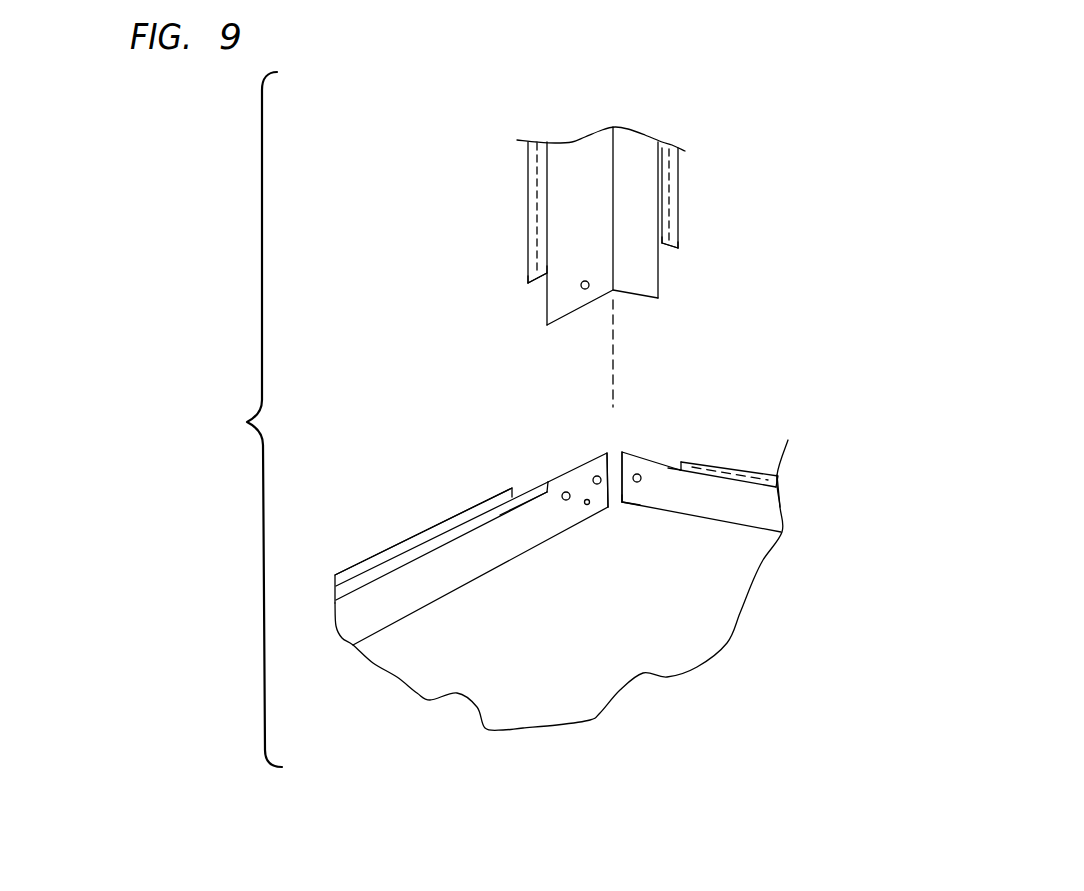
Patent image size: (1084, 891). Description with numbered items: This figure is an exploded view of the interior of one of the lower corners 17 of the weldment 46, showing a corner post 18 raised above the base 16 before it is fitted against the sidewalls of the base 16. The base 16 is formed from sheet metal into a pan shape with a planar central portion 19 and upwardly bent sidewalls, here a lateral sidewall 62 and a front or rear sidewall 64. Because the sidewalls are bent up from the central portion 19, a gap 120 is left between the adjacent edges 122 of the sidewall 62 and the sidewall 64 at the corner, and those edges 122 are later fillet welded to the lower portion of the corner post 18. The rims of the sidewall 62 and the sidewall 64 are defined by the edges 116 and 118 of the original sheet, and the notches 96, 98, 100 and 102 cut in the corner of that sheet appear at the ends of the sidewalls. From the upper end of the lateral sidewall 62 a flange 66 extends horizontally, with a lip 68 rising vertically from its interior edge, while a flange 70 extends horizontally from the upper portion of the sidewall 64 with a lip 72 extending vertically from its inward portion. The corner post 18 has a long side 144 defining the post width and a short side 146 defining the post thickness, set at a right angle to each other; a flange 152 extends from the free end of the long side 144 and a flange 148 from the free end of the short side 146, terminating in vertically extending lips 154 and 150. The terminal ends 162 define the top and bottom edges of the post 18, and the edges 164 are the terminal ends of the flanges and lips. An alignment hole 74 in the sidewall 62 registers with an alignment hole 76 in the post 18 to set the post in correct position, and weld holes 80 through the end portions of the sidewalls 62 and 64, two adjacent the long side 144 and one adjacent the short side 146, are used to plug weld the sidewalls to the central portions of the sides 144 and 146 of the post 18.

The base 16 is at (760, 584).
The lower corner 17 is at (738, 348).
The corner post 18 is at (516, 174).
The planar central portion 19 is at (428, 653).
The weldment 46 is at (853, 342).
The lateral sidewall 62 is at (767, 508).
The front and rear sidewall 64 is at (375, 602).
The flange 66 is at (675, 474).
The lip 68 is at (760, 480).
The flange 70 is at (425, 553).
The lip 72 is at (380, 553).
The alignment hole 74 is at (589, 505).
The alignment hole 76 is at (586, 289).
The weld hole 80 is at (595, 476).
The notch 96 is at (547, 481).
The notch 98 is at (525, 501).
The notch 100 is at (678, 470).
The notch 102 is at (683, 472).
The edge 116 is at (730, 475).
The edge 118 is at (470, 507).
The gap 120 is at (614, 452).
The edge 122 is at (618, 503).
The long side 144 is at (582, 148).
The short side 146 is at (628, 140).
The flange 148 is at (668, 176).
The lip 150 is at (660, 245).
The flange 152 is at (539, 240).
The lip 154 is at (530, 268).
The terminal end 162 is at (638, 300).
The edge 164 is at (670, 250).